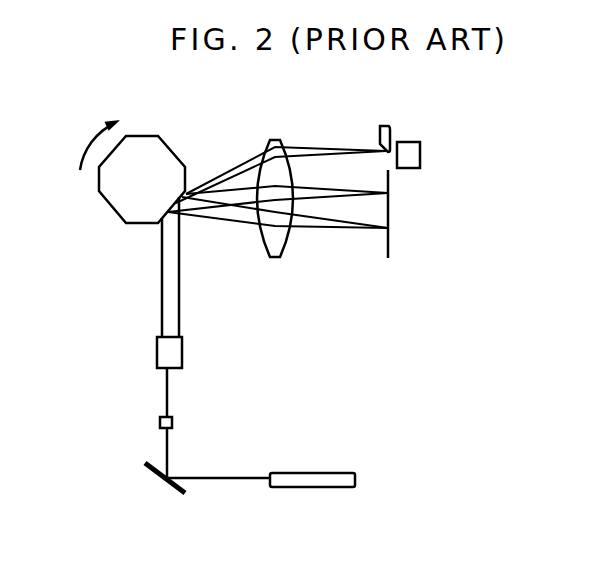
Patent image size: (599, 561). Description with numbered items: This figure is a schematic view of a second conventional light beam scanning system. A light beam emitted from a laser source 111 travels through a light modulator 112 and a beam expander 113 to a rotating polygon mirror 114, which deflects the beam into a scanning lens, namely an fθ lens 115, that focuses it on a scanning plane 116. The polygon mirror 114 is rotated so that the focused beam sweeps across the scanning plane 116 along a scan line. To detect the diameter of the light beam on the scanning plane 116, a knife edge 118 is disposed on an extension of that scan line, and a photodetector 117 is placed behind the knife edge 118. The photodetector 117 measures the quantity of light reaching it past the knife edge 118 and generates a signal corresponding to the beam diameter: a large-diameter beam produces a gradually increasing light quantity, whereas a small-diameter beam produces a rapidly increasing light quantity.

The laser source 111 is at (316, 481).
The light modulator 112 is at (172, 421).
The beam expander 113 is at (182, 355).
The rotating polygon mirror 114 is at (118, 206).
The scanning lens (fθ lens) 115 is at (276, 257).
The scanning plane 116 is at (388, 245).
The photodetector 117 is at (423, 155).
The knife edge 118 is at (377, 134).